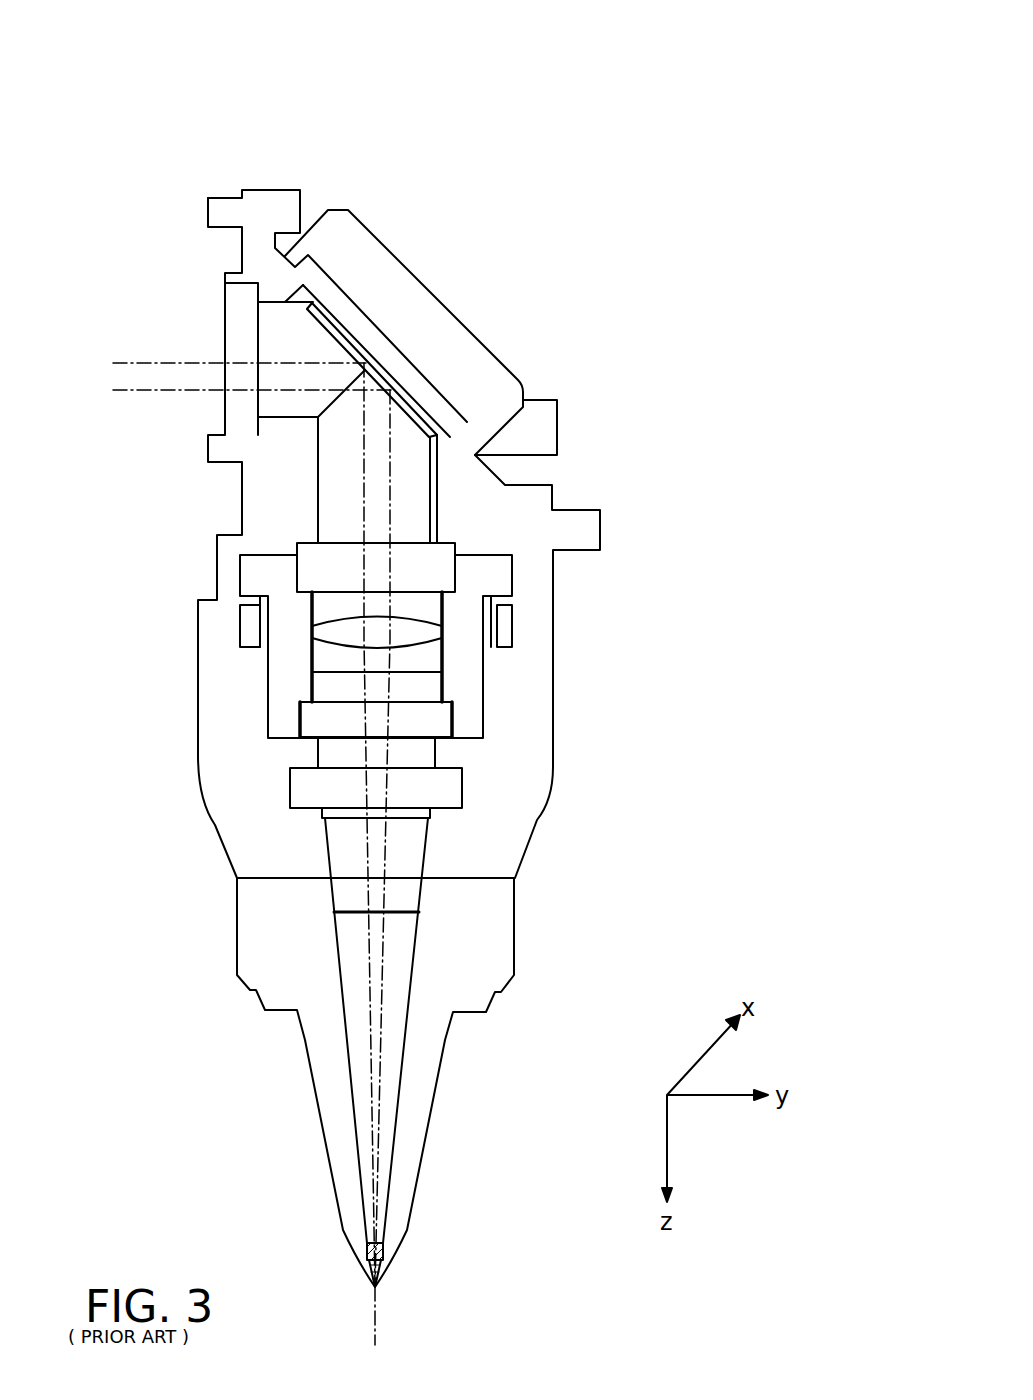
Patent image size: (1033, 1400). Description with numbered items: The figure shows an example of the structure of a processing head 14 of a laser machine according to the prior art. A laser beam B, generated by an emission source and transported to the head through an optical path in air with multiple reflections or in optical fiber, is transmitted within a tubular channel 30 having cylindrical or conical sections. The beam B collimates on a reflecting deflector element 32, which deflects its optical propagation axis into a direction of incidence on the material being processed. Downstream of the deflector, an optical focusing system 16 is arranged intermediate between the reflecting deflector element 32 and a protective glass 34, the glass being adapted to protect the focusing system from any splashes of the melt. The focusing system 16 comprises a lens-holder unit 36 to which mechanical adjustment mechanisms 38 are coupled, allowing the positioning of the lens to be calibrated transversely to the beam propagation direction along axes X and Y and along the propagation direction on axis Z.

The processing head 14 is at (662, 186).
The tubular channel 30 is at (318, 367).
The reflecting deflector element 32 is at (435, 398).
The lens-holder unit 36 is at (502, 578).
The mechanical adjustment mechanisms 38 is at (502, 632).
The optical focusing system 16 is at (413, 638).
The protective glass 34 is at (420, 911).
The laser beam B is at (143, 352).